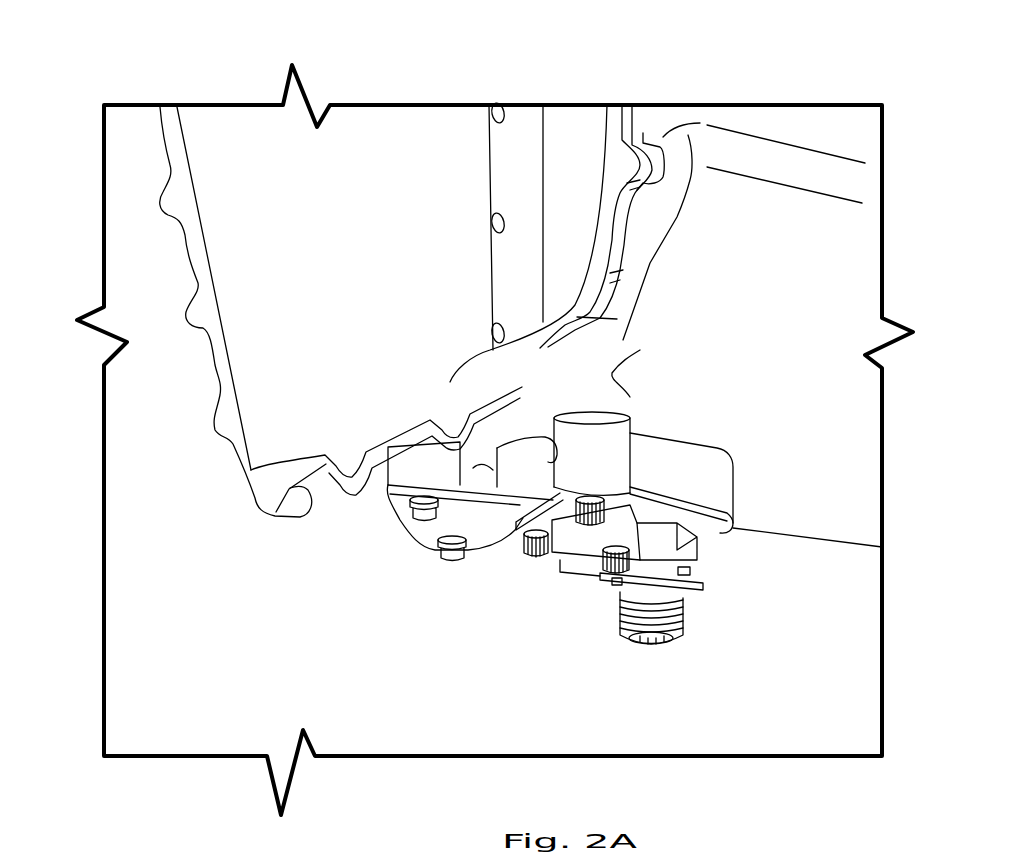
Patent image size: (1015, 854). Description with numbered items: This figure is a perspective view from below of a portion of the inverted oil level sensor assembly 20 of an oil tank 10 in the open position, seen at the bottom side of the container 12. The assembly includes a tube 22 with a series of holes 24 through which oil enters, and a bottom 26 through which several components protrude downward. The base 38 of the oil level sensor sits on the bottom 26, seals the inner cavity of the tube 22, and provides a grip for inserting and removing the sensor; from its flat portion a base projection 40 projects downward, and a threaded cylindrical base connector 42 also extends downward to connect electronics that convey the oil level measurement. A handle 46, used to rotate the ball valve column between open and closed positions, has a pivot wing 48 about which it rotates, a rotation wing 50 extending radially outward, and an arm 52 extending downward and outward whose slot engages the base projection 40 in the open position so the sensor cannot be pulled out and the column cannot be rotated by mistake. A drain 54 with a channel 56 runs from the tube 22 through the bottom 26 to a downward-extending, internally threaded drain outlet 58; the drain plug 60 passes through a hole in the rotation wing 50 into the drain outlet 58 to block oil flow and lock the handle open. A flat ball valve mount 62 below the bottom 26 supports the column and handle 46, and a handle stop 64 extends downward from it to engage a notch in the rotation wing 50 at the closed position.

The oil tank 10 is at (924, 112).
The container 12 is at (246, 456).
The oil level sensor assembly 20 is at (591, 508).
The tube 22 is at (512, 188).
The series of holes 24 is at (494, 338).
The bottom 26 is at (699, 489).
The base 38 is at (710, 527).
The base projection 40 is at (623, 530).
The base connector 42 is at (686, 627).
The handle 46 is at (622, 586).
The pivot wing 48 is at (517, 522).
The rotation wing 50 is at (632, 487).
The arm 52 is at (583, 548).
The drain 54 is at (546, 434).
The channel 56 is at (548, 455).
The drain outlet 58 is at (600, 427).
The drain plug 60 is at (590, 524).
The ball valve mount 62 is at (420, 530).
The handle stop 64 is at (424, 503).